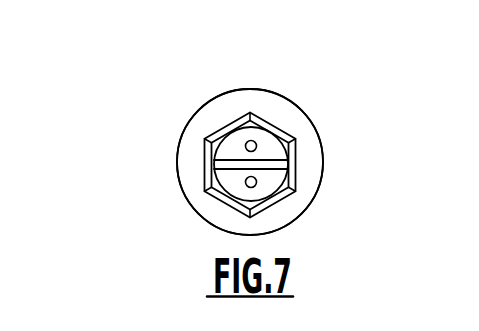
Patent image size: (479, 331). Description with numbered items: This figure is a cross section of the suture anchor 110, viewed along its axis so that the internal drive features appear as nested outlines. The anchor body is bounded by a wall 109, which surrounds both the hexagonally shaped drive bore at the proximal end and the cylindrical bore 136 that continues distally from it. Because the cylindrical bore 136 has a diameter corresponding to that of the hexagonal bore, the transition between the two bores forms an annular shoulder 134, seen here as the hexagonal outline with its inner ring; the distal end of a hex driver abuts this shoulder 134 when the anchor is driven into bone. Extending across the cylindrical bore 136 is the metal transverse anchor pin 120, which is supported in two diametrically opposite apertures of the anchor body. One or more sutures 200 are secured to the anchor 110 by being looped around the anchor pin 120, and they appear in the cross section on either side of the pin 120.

The suture anchor 110 is at (370, 97).
The wall 109 is at (307, 148).
The annular shoulder 134 is at (293, 178).
The metal transverse anchor pin 120 is at (235, 160).
The cylindrical bore 136 is at (254, 142).
The sutures 200 is at (236, 163).